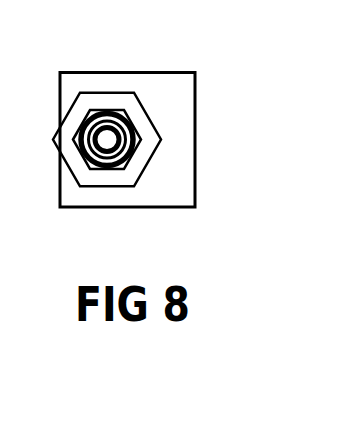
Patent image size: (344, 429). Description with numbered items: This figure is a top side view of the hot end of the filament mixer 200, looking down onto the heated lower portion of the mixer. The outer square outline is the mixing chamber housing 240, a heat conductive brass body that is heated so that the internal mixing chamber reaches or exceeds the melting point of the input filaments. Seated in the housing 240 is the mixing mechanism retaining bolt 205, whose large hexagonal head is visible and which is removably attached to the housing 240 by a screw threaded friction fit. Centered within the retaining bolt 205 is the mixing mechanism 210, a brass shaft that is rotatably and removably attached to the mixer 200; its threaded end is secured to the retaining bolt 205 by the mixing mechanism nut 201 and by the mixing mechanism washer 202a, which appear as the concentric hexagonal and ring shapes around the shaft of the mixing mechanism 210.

The filament mixer 200 is at (208, 62).
The mixing mechanism nut 201 is at (78, 134).
The mixing mechanism washer 202a is at (103, 106).
The mixing mechanism retaining bolt 205 is at (123, 93).
The mixing mechanism 210 is at (79, 154).
The mixing chamber housing 240 is at (182, 138).